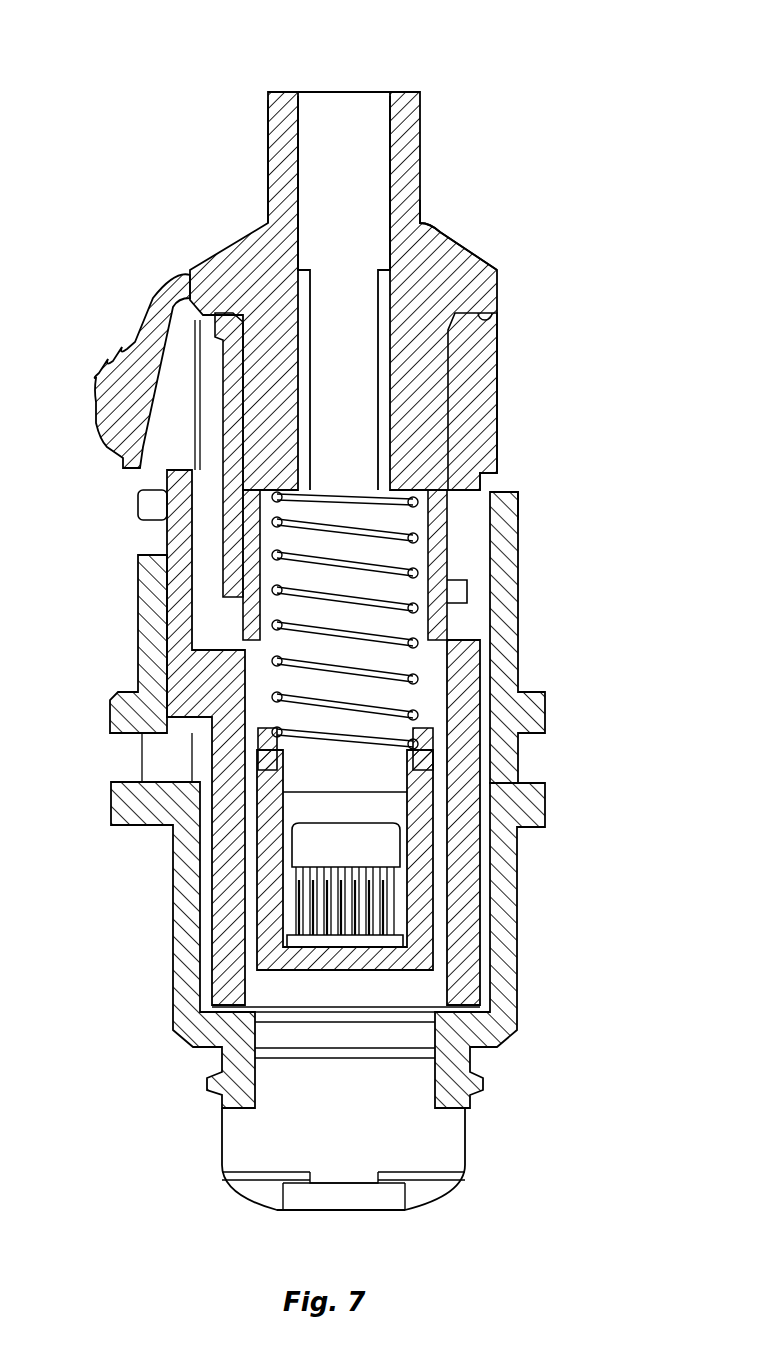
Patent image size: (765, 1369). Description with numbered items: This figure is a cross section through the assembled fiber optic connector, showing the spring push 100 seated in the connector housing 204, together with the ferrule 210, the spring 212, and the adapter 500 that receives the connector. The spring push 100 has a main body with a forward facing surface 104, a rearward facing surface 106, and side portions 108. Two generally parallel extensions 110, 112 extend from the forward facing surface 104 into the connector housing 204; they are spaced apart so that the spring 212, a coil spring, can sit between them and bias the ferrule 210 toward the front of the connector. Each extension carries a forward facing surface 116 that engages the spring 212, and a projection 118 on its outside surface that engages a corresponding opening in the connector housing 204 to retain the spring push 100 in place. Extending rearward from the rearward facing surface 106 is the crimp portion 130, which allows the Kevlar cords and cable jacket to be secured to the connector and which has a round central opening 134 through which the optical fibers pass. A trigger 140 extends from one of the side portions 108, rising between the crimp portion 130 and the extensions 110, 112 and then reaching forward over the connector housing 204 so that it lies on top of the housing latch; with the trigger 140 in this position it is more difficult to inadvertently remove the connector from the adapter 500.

The spring push 100 is at (351, 301).
The forward facing surface 104 is at (485, 318).
The rearward facing surface 106 is at (440, 230).
The side portions 108 is at (480, 252).
The generally parallel extension 110 is at (407, 565).
The generally parallel extension 112 is at (314, 626).
The forward facing surface 116 is at (430, 497).
The projection 118 is at (465, 590).
The crimp portion 130 is at (268, 113).
The central opening 134 is at (345, 113).
The trigger 140 is at (110, 405).
The connector housing 204 is at (220, 745).
The ferrule 210 is at (430, 863).
The spring 212 is at (420, 688).
The adapter 500 is at (182, 962).